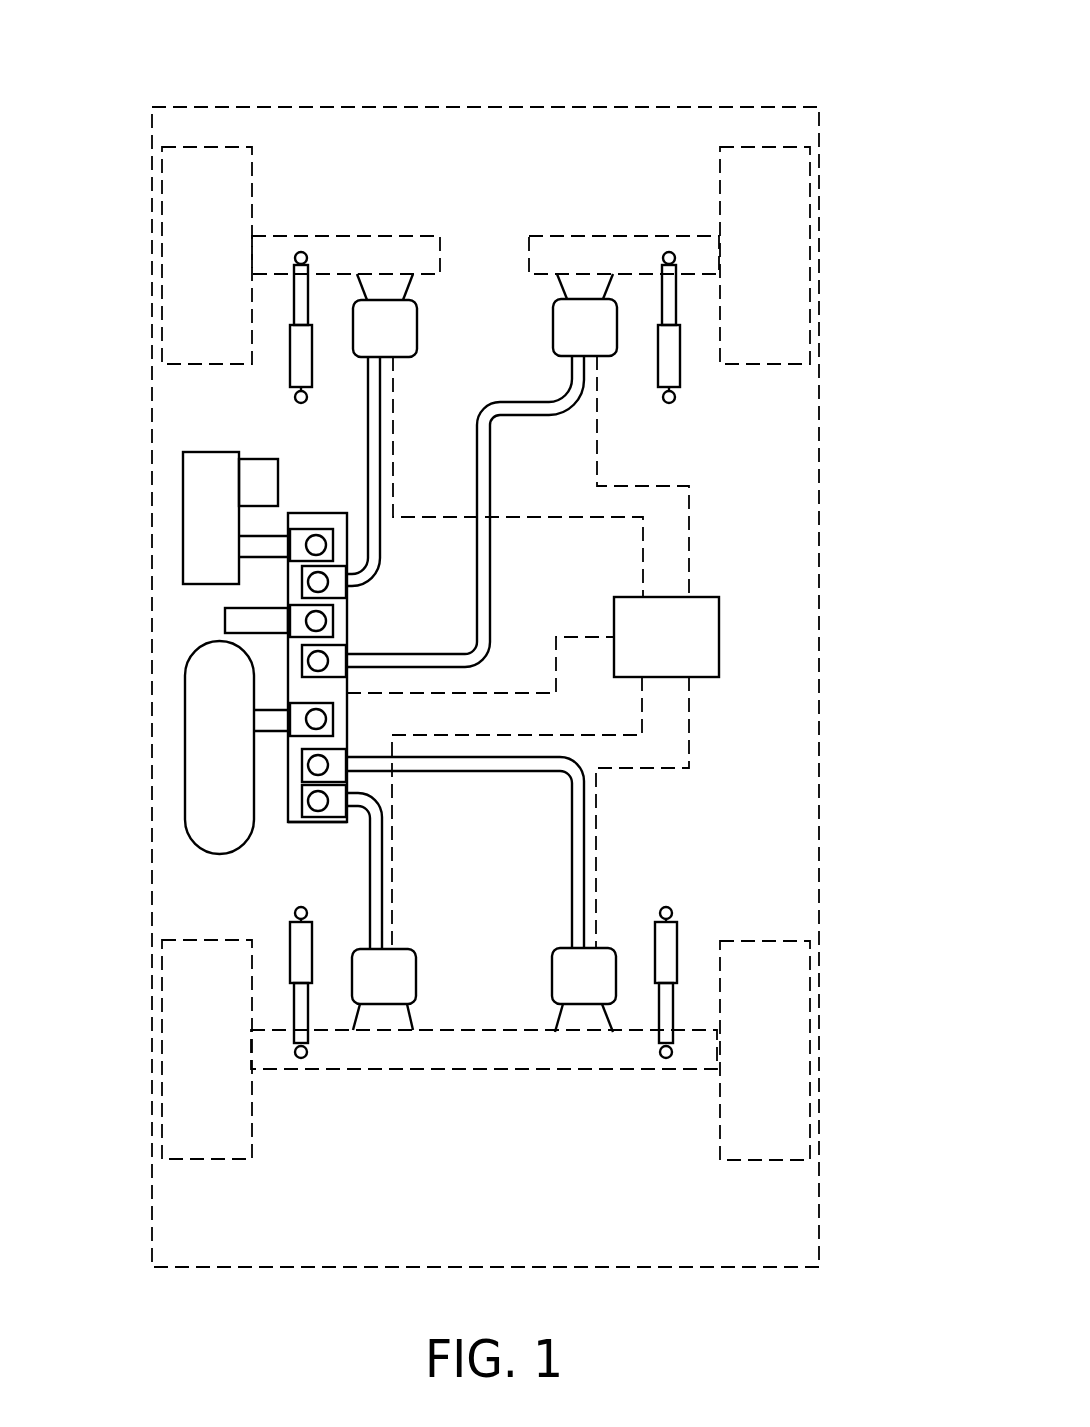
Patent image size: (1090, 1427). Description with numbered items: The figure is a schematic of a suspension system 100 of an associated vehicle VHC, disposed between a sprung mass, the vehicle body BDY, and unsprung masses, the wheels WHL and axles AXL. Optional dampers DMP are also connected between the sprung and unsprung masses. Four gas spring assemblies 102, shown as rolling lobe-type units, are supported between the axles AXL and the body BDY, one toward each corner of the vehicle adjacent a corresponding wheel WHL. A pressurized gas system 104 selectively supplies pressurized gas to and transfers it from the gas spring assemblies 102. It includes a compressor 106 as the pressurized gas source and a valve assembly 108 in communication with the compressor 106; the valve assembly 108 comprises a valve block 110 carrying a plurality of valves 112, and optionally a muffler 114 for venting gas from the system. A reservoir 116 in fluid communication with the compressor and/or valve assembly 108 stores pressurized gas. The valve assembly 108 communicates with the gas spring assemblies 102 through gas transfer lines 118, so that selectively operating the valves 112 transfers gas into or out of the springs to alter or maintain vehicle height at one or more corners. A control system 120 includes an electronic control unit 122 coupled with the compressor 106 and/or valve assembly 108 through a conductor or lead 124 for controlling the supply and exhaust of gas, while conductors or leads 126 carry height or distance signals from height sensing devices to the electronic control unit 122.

The suspension system 100 is at (790, 476).
The gas spring assemblies 102 is at (440, 306).
The pressurized gas system 104 is at (163, 594).
The compressor 106 is at (200, 487).
The valve assembly 108 is at (326, 500).
The valve block 110 is at (320, 823).
The valves 112 is at (328, 582).
The muffler 114 is at (225, 622).
The reservoir 116 is at (190, 728).
The gas transfer lines 118 is at (382, 423).
The control system 120 is at (725, 572).
The electronic control unit 122 is at (685, 654).
The conductor or lead 124 is at (602, 635).
The conductors or leads 126 is at (393, 443).
The vehicle body BDY is at (556, 100).
The vehicle VHC is at (758, 65).
The wheel WHL is at (183, 187).
The axle AXL is at (352, 257).
The dampers DMP is at (288, 367).